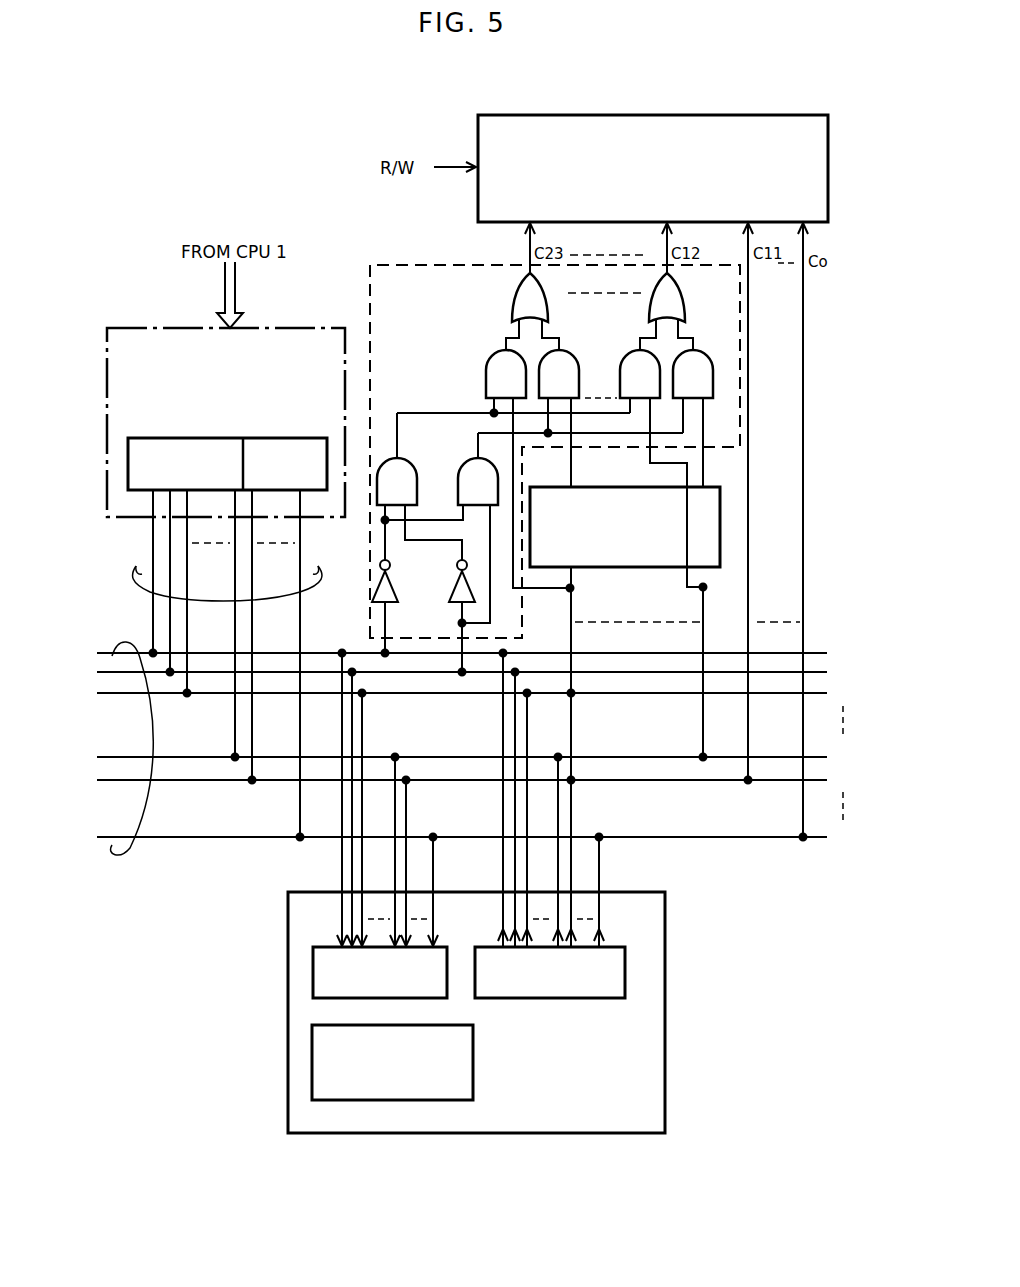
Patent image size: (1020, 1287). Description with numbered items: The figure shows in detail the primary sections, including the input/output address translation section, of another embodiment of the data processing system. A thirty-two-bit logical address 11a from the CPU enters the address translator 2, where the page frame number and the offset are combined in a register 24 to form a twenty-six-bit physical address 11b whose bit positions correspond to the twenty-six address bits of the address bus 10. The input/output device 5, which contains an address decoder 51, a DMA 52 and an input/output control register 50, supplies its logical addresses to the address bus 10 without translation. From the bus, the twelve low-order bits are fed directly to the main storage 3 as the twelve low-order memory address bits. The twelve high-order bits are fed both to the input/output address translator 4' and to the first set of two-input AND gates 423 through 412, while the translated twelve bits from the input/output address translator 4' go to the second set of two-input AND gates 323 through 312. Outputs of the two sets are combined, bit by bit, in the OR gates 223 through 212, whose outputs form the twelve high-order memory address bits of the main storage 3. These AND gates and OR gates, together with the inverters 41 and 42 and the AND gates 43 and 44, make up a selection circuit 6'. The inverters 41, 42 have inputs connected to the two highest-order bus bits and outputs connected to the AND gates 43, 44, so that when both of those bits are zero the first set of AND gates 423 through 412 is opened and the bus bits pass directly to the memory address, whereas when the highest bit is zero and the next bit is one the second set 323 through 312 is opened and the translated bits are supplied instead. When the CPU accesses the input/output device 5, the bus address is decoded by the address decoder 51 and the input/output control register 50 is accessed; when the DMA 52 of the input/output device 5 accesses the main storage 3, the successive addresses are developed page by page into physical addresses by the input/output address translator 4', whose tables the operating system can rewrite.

The main storage 3 is at (698, 114).
The selection circuit 6' is at (585, 426).
The address translator 2 is at (152, 327).
The logical address 11a is at (237, 281).
The physical address 11b is at (212, 589).
The register 24 is at (232, 438).
The OR gate 223 is at (513, 304).
The OR gate 212 is at (683, 302).
The two-input AND gate of second set 323 is at (569, 352).
The two-input AND gate of first set 412 is at (621, 380).
The two-input AND gate of first set 423 is at (488, 378).
The two-input AND gate of second set 312 is at (714, 372).
The AND gate 43 is at (398, 458).
The AND gate 44 is at (476, 458).
The inverter 41 is at (398, 586).
The inverter 42 is at (447, 610).
The input/output address translator 4' is at (635, 542).
The address bus 10 is at (120, 852).
The input/output device 5 is at (666, 1100).
The address decoder 51 is at (448, 998).
The DMA 52 is at (583, 998).
The input/output control register 50 is at (473, 1098).